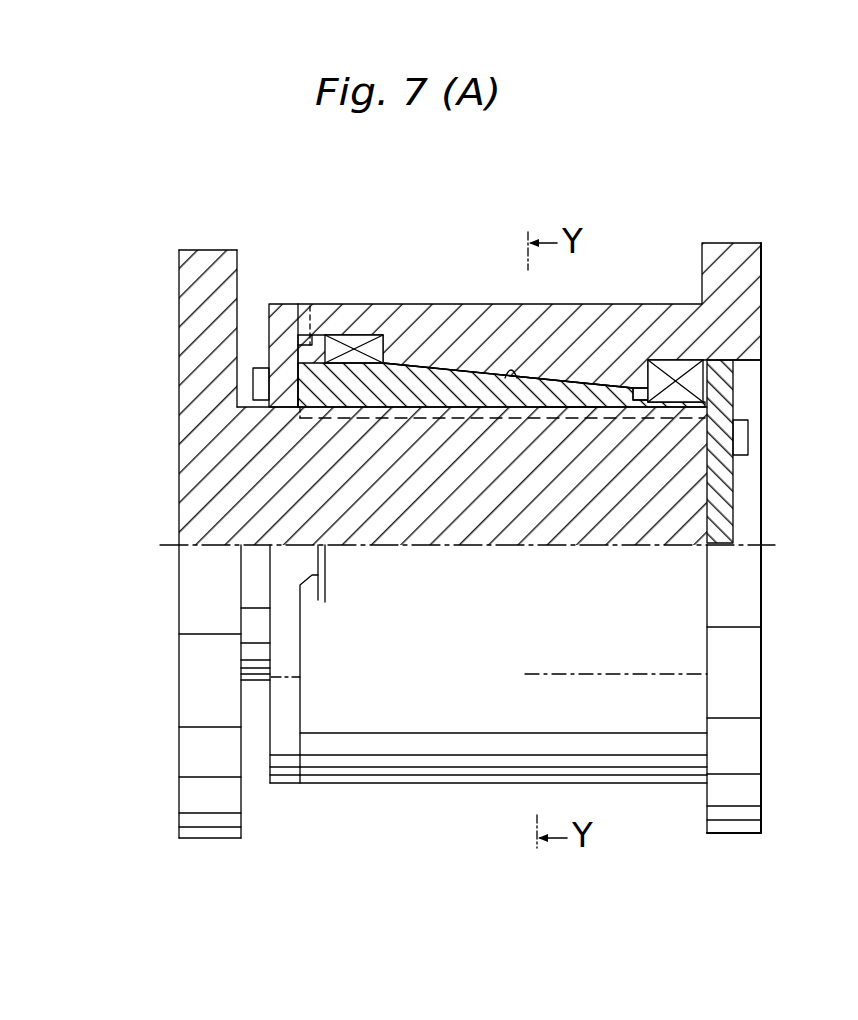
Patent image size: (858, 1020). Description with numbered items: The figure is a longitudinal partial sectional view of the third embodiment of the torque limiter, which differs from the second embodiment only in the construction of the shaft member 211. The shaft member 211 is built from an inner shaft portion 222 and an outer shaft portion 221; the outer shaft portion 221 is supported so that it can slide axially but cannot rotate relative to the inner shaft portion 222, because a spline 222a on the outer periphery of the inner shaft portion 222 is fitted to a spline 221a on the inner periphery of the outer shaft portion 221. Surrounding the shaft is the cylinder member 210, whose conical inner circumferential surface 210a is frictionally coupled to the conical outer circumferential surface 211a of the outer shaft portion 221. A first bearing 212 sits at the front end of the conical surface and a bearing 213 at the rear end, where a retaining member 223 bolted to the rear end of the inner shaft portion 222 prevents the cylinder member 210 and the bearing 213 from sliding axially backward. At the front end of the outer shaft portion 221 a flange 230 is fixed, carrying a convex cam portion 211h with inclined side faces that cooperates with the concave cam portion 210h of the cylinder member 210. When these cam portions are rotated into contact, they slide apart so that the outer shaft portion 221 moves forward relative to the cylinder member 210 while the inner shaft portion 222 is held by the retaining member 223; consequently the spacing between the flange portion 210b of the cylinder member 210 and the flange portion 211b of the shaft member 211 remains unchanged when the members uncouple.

The cylinder member 210 is at (417, 301).
The conical inner circumferential surface 210a is at (466, 370).
The flange portion 210b is at (730, 262).
The concave cam portion 210h is at (313, 589).
The shaft member 211 is at (176, 572).
The conical outer circumferential surface 211a is at (512, 382).
The flange portion 211b is at (207, 266).
The convex cam portion 211h is at (326, 576).
The first bearing 212 is at (336, 348).
The bearing 213 is at (697, 380).
The outer shaft portion 221 is at (393, 402).
The spline 221a is at (553, 403).
The inner shaft portion 222 is at (373, 488).
The spline 222a is at (577, 403).
The retaining member 223 is at (718, 412).
The flange 230 is at (300, 333).